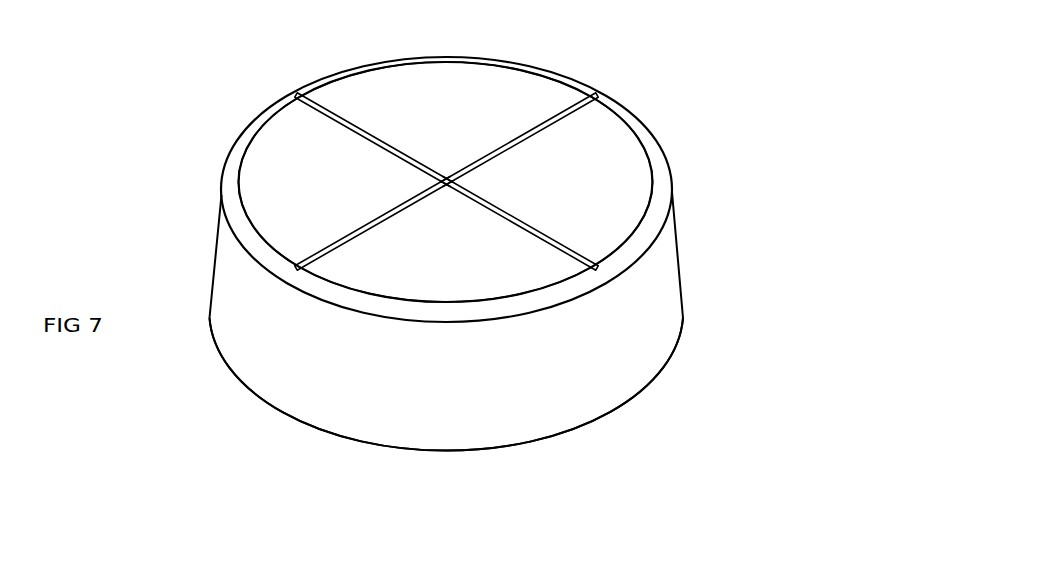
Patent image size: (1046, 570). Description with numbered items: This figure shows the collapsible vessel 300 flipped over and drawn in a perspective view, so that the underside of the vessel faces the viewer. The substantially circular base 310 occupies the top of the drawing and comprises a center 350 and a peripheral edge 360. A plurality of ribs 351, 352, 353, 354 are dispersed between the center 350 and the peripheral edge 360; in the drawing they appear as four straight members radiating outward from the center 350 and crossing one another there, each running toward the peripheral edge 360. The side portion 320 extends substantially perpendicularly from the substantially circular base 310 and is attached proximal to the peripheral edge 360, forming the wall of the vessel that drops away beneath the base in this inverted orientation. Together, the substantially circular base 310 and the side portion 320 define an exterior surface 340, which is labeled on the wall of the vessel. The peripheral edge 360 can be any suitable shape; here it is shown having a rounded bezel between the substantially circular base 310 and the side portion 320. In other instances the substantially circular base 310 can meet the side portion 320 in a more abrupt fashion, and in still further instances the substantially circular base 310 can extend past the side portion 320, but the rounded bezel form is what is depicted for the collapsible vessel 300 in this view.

The collapsible vessel 300 is at (192, 105).
The substantially circular base 310 is at (268, 180).
The side portion 320 is at (312, 395).
The exterior surface 340 is at (420, 427).
The center 350 is at (448, 186).
The rib 351 is at (317, 254).
The rib 352 is at (384, 140).
The rib 353 is at (572, 113).
The rib 354 is at (563, 245).
The peripheral edge 360 is at (555, 288).